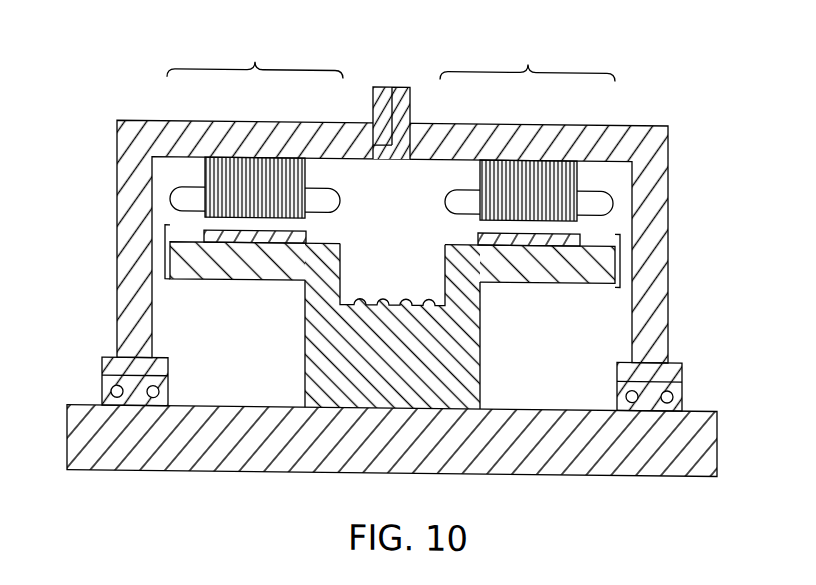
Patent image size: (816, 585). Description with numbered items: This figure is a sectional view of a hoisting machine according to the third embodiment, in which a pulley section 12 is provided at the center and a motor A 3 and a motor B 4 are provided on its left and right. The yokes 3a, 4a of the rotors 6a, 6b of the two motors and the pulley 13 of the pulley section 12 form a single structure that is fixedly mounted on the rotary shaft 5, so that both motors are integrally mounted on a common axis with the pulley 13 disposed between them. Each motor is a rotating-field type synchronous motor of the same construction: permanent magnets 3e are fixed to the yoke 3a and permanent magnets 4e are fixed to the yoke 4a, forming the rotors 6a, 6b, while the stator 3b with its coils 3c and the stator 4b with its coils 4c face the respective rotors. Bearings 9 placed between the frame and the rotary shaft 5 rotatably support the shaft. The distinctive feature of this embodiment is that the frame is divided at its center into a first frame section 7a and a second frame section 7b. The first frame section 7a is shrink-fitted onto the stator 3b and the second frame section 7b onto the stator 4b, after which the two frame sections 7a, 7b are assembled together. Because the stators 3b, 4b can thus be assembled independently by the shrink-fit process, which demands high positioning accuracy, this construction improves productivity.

The motor A 3 is at (255, 51).
The motor B 4 is at (527, 54).
The pulley section 12 is at (347, 75).
The first frame section 7a is at (133, 171).
The second frame section 7b is at (647, 156).
The yoke 3a is at (232, 271).
The yoke 4a is at (547, 278).
The stator 3b is at (307, 173).
The stator 4b is at (478, 176).
The coils 3c is at (343, 196).
The coils 4c is at (446, 197).
The permanent magnets 3e is at (306, 234).
The permanent magnets 4e is at (478, 233).
The rotor 6a is at (163, 250).
The rotor 6b is at (622, 256).
The pulley 13 is at (397, 297).
The bearings 9 is at (102, 381).
The rotary shaft 5 is at (663, 447).